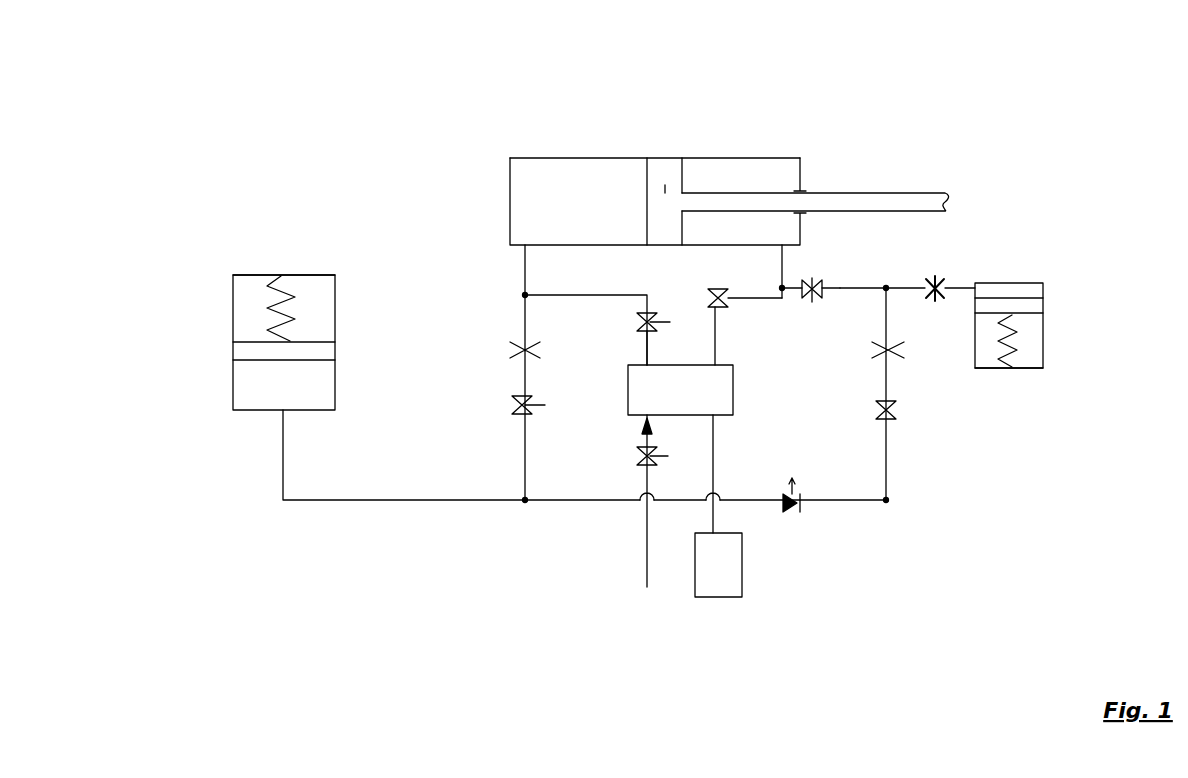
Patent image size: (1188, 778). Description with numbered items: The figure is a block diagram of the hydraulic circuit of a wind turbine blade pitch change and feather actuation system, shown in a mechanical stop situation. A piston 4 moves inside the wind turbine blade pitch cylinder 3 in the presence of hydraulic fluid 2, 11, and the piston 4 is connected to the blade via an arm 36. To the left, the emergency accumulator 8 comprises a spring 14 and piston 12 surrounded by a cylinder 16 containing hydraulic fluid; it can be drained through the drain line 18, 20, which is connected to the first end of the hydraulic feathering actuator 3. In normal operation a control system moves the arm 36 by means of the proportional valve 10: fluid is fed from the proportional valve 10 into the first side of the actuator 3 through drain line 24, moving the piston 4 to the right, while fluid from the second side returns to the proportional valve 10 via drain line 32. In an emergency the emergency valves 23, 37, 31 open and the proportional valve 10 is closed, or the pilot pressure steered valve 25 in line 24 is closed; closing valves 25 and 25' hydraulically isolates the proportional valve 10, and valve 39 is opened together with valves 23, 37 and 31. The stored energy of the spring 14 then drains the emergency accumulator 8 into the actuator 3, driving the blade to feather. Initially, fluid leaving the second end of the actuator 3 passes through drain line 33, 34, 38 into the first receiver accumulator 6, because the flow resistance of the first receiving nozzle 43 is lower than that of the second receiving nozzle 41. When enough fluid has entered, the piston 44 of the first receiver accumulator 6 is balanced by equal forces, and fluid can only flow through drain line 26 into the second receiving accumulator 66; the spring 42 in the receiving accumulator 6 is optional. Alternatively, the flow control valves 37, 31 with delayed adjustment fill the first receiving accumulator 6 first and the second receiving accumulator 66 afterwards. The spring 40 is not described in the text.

The hydraulic fluid 2 is at (588, 193).
The wind turbine blade pitch cylinder 3 is at (528, 130).
The piston 4 is at (665, 185).
The first receiver accumulator 6 is at (1018, 277).
The emergency accumulator 8 is at (335, 237).
The proportional valve 10 is at (681, 365).
The hydraulic fluid 11 is at (758, 180).
The piston 12 is at (252, 340).
The spring 14 is at (282, 300).
The cylinder 16 is at (237, 405).
The drain line 18 is at (301, 500).
The drain line 20 is at (527, 270).
The emergency valve 23 is at (515, 413).
The drain line 24 is at (620, 297).
The pilot pressure steered valve 25 is at (563, 534).
The valve 25' is at (782, 212).
The drain line 26 is at (708, 477).
The emergency valve 31 is at (785, 507).
The drain line 32 is at (782, 290).
The drain line 33 is at (790, 265).
The drain line 34 is at (865, 290).
The arm 36 is at (880, 193).
The emergency valve 37 is at (817, 300).
The drain line 38 is at (955, 290).
The valve 39 is at (886, 358).
The spring 40 is at (985, 372).
The second receiving nozzle 41 is at (893, 358).
The spring 42 is at (1007, 372).
The first receiving nozzle 43 is at (940, 280).
The piston 44 is at (1035, 305).
The second receiving accumulator 66 is at (695, 593).